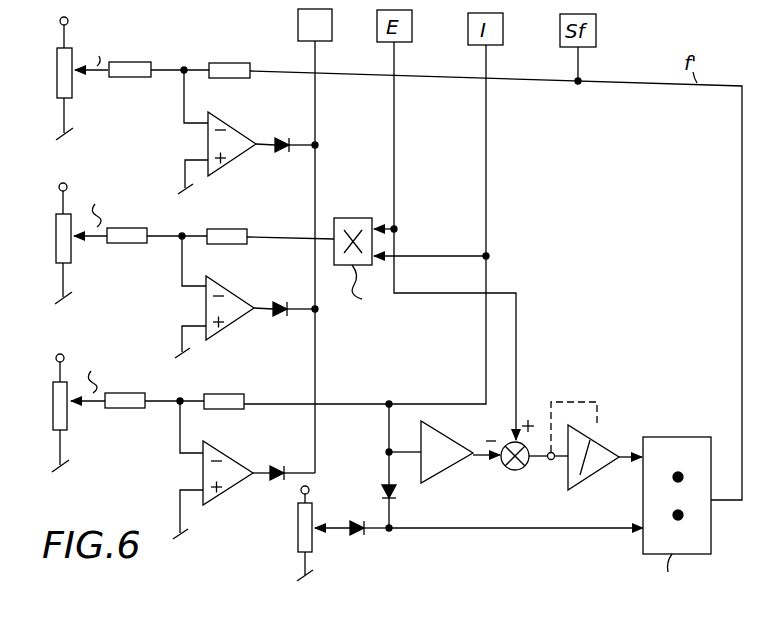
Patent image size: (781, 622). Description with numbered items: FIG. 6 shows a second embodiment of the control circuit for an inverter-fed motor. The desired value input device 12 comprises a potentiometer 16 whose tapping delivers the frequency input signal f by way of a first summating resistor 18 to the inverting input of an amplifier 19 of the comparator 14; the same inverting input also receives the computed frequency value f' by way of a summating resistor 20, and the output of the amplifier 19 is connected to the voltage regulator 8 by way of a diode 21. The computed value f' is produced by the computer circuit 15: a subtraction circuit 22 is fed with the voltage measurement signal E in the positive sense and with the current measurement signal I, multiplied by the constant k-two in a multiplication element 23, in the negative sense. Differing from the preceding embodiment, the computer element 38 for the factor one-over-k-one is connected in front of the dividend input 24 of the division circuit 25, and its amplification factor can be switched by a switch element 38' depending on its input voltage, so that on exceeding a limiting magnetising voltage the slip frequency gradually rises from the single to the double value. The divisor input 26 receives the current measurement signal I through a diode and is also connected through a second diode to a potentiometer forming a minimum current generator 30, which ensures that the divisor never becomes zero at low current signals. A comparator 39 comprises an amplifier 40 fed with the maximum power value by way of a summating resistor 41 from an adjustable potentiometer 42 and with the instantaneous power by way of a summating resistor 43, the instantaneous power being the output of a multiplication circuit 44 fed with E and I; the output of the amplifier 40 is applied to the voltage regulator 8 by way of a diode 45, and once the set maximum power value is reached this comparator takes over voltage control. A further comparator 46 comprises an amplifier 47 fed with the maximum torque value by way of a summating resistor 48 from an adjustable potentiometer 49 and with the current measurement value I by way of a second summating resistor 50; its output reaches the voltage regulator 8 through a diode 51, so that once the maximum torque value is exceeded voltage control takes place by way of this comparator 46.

The voltage regulator 8 is at (298, 23).
The desired value input device 12 is at (61, 94).
The comparator 14 is at (215, 133).
The computer circuit 15 is at (606, 418).
The potentiometer 16 is at (76, 86).
The first summating resistor 18 is at (132, 63).
The amplifier 19 is at (238, 131).
The summating resistor 20 is at (233, 63).
The diode 21 is at (287, 155).
The subtraction circuit 22 is at (511, 472).
The multiplication element 23 is at (448, 474).
The dividend input 24 is at (622, 463).
The division circuit 25 is at (645, 545).
The divisor input 26 is at (598, 530).
The minimum current generator 30 is at (325, 541).
The computer element 38 is at (597, 440).
The switch element 38' is at (574, 406).
The comparator 39 is at (213, 297).
The amplifier 40 is at (239, 296).
The summating resistor 41 is at (133, 229).
The adjustable potentiometer 42 is at (56, 246).
The summating resistor 43 is at (228, 229).
The multiplication circuit 44 is at (356, 218).
The diode 45 is at (285, 318).
The comparator 46 is at (211, 470).
The amplifier 47 is at (240, 464).
The summating resistor 48 is at (134, 395).
The adjustable potentiometer 49 is at (52, 409).
The second summating resistor 50 is at (220, 395).
The diode 51 is at (280, 483).